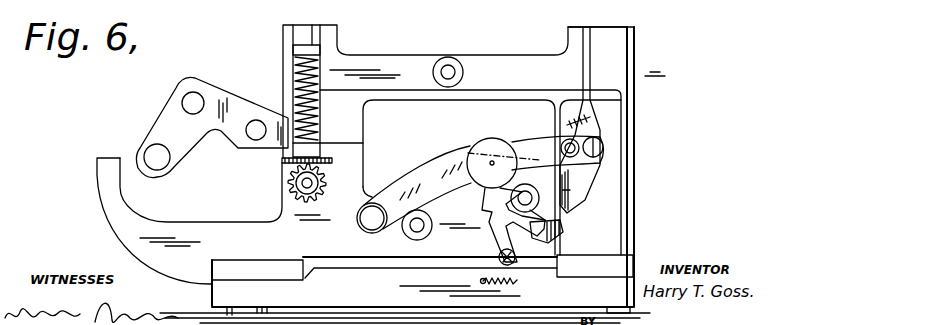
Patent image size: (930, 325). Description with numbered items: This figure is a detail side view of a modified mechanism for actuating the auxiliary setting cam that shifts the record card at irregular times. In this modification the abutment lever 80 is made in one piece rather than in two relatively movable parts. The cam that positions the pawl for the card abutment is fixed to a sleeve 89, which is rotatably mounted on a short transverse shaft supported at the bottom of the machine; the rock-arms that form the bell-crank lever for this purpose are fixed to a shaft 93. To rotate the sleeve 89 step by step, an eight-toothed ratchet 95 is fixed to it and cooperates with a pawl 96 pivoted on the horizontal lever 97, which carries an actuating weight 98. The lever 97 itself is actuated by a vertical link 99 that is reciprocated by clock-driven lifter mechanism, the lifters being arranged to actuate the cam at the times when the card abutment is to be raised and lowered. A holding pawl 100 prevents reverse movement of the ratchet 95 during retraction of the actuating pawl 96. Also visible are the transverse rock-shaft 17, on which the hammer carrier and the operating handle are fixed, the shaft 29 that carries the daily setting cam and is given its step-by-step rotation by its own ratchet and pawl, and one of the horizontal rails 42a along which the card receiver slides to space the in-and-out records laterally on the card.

The transverse rock-shaft 17 is at (195, 97).
The horizontal rail 42a is at (253, 138).
The shaft 29 is at (450, 68).
The vertical link 99 is at (590, 60).
The pawl 96 is at (583, 198).
The horizontal lever 97 is at (433, 170).
The actuating weight 98 is at (488, 138).
The abutment lever 80 is at (523, 205).
The sleeve 89 is at (536, 209).
The eight-toothed ratchet 95 is at (542, 238).
The shaft 93 is at (418, 232).
The holding pawl 100 is at (493, 238).